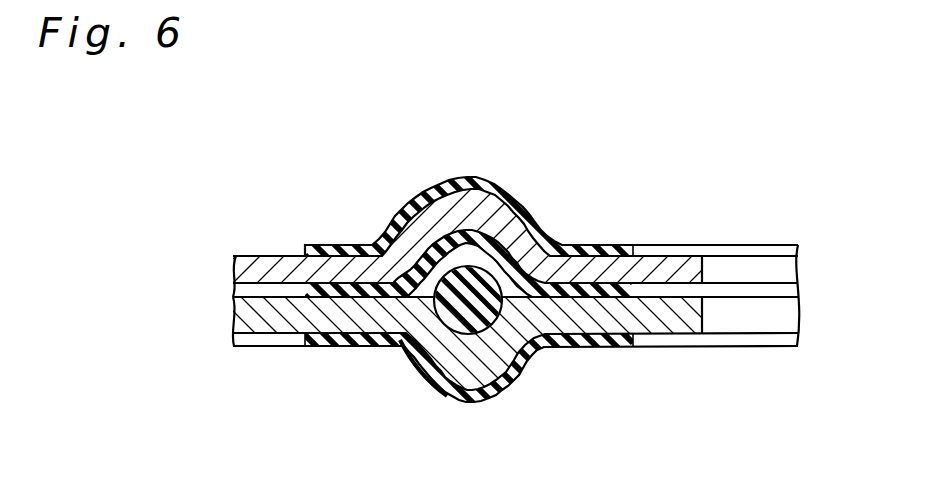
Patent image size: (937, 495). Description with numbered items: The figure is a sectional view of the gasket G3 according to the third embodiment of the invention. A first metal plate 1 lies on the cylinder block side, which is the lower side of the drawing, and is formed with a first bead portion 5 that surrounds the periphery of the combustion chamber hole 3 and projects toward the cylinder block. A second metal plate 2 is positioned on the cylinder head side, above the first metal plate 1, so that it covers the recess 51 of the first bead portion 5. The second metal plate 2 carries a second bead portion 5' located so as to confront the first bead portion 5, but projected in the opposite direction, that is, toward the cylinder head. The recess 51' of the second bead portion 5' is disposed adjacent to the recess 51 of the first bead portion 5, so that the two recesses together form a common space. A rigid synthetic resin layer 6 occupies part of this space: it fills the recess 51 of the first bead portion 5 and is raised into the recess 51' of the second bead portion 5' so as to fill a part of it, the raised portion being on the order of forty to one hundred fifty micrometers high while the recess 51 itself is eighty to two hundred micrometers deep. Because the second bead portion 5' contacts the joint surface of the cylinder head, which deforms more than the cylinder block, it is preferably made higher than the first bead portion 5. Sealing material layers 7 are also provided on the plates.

The first metal plate 1 is at (282, 318).
The second metal plate 2 is at (264, 263).
The combustion chamber hole 3 is at (760, 310).
The first bead portion 5 is at (474, 408).
The second bead portion 5' is at (472, 174).
The recess of first bead portion 51 is at (396, 387).
The recess of second bead portion 51' is at (469, 213).
The rigid synthetic resin layer 6 is at (512, 356).
The sealing material layer 7 is at (601, 336).
The gasket G3 is at (650, 239).